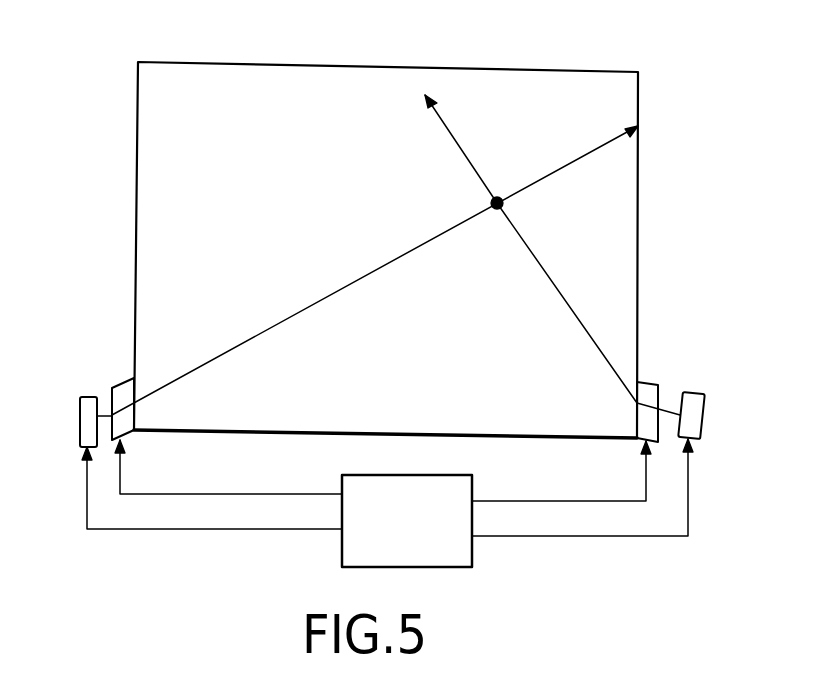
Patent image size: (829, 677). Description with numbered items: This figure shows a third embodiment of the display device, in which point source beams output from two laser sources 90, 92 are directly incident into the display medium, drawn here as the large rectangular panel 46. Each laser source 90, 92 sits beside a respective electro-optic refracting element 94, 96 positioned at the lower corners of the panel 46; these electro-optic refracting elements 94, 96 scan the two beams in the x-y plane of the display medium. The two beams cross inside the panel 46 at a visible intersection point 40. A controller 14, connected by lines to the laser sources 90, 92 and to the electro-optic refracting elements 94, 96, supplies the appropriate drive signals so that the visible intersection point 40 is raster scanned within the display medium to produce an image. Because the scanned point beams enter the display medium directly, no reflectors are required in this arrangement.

The screen 46 is at (597, 71).
The visible intersection point 40 is at (503, 204).
The electro-optic refracting element 94 is at (125, 380).
The laser source 90 is at (80, 423).
The electro-optic refracting element 96 is at (648, 380).
The laser source 92 is at (703, 425).
The controller 14 is at (415, 527).